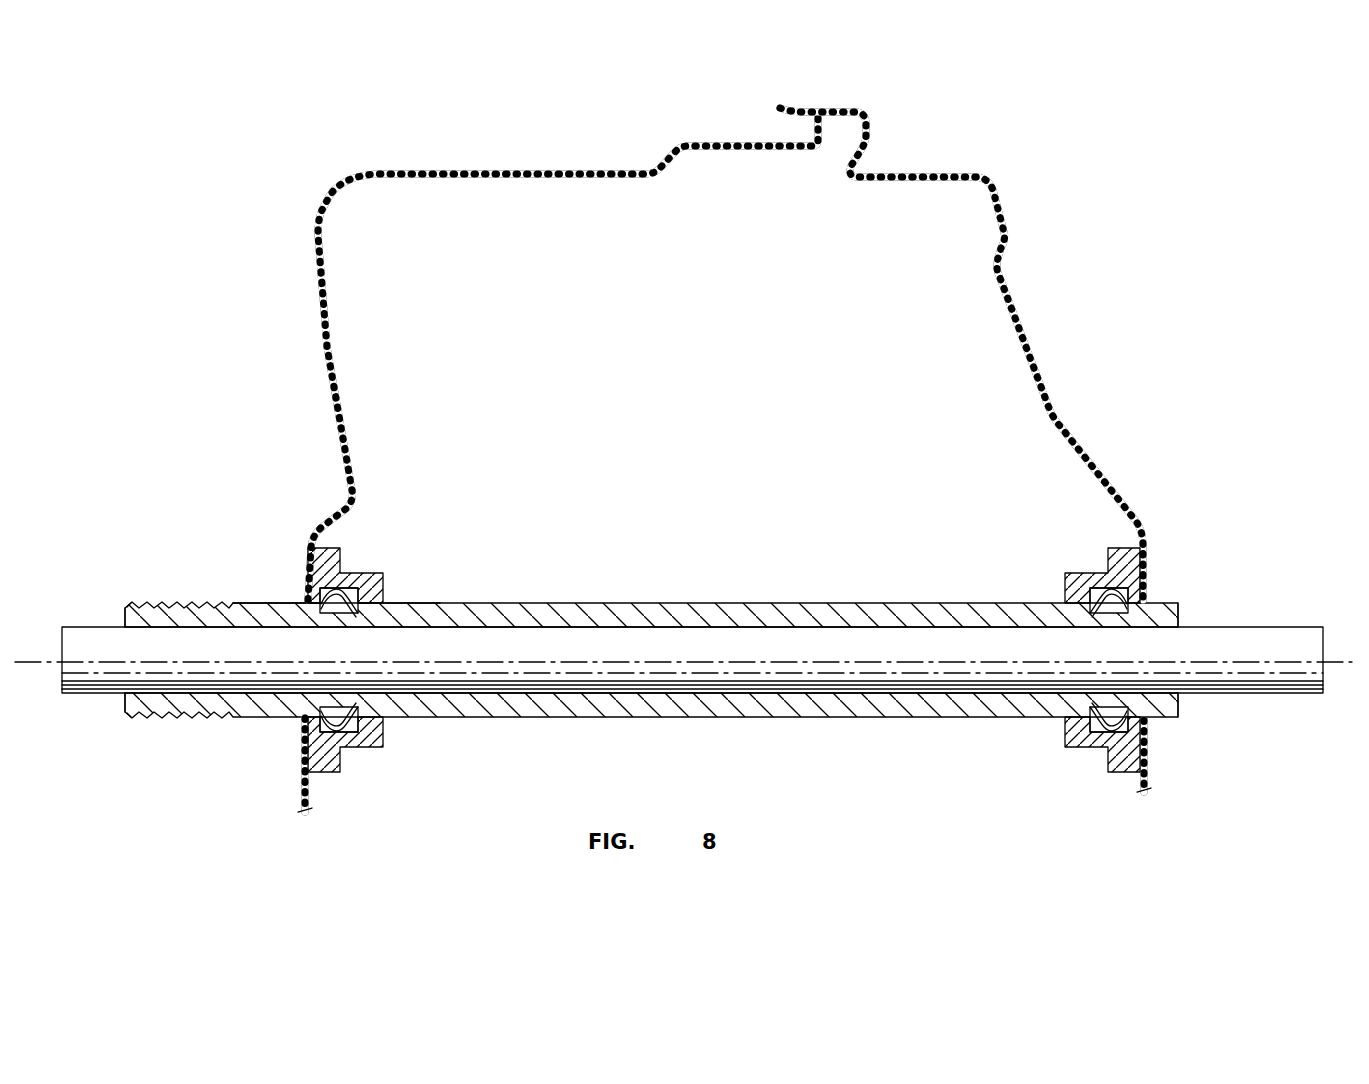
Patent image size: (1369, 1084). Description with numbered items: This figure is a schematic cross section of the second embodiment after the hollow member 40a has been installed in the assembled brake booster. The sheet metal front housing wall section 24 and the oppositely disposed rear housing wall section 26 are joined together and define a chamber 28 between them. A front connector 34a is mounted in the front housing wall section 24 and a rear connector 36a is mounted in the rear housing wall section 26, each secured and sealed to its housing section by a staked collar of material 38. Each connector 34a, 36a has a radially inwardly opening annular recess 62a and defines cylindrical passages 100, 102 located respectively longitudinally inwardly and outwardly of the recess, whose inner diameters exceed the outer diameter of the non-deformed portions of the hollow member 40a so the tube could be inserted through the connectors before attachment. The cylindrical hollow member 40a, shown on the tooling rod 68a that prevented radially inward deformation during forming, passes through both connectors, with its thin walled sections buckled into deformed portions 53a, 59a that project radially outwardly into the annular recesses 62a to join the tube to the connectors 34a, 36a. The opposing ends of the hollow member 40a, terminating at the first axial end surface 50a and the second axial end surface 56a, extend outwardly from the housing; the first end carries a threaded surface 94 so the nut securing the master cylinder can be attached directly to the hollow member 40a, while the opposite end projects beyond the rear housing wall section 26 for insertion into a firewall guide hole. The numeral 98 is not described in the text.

The front housing wall section 24 is at (322, 345).
The rear housing wall section 26 is at (1035, 355).
The chamber 28 is at (641, 311).
The front connector 34a is at (331, 553).
The rear connector 36a is at (1115, 545).
The collar of material 38 is at (297, 598).
The hollow member 40a is at (678, 610).
The first axial end surface 50a is at (120, 606).
The deformed portion 53a is at (342, 725).
The second axial end surface 56a is at (1180, 618).
The deformed portion 59a is at (1093, 598).
The annular recess 62a is at (345, 592).
The tooling rod 68a is at (1287, 637).
The threaded surface 94 is at (153, 602).
The sleeve end 98 is at (1178, 700).
The cylindrical passage 100 is at (398, 604).
The cylindrical passage 102 is at (300, 600).